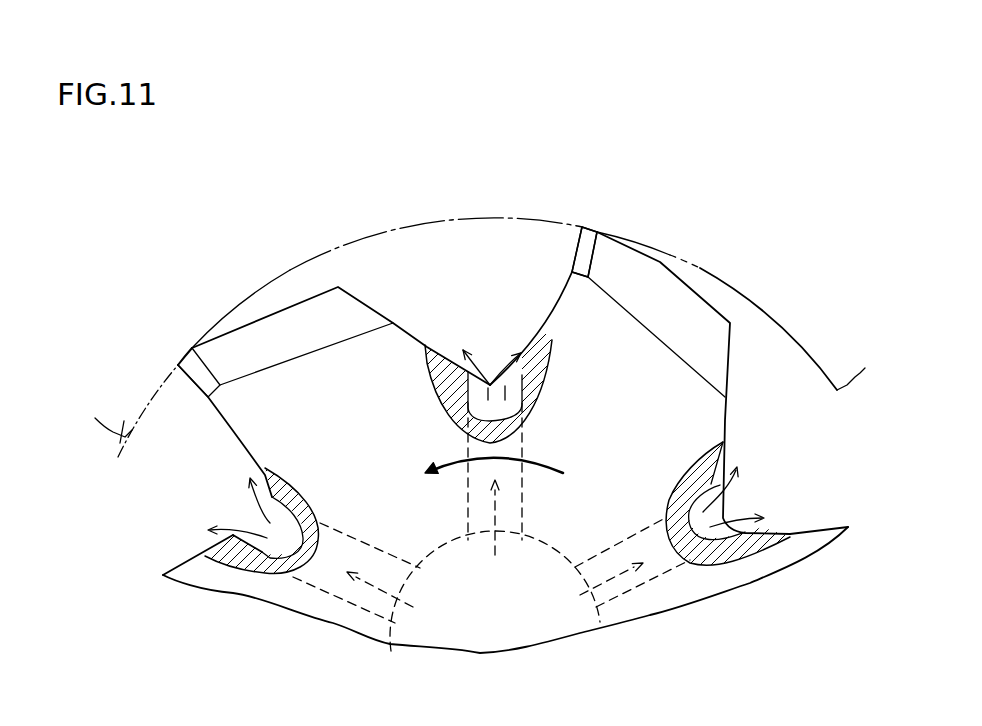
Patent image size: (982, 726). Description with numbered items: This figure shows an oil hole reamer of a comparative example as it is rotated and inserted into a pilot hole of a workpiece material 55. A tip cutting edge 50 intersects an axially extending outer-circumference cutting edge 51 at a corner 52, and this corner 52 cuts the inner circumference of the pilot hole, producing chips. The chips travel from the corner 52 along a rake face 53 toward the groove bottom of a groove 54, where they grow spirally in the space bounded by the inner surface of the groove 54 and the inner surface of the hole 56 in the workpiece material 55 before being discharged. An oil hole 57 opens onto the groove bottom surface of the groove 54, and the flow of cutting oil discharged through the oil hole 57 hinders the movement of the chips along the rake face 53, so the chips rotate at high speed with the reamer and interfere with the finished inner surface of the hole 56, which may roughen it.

The tip cutting edge 50 is at (577, 250).
The outer-circumference cutting edge 51 is at (580, 223).
The corner 52 is at (583, 225).
The rake face 53 is at (563, 293).
The groove 54 is at (405, 333).
The workpiece material 55 is at (122, 440).
The hole 56 is at (349, 251).
The oil hole 57 is at (492, 383).